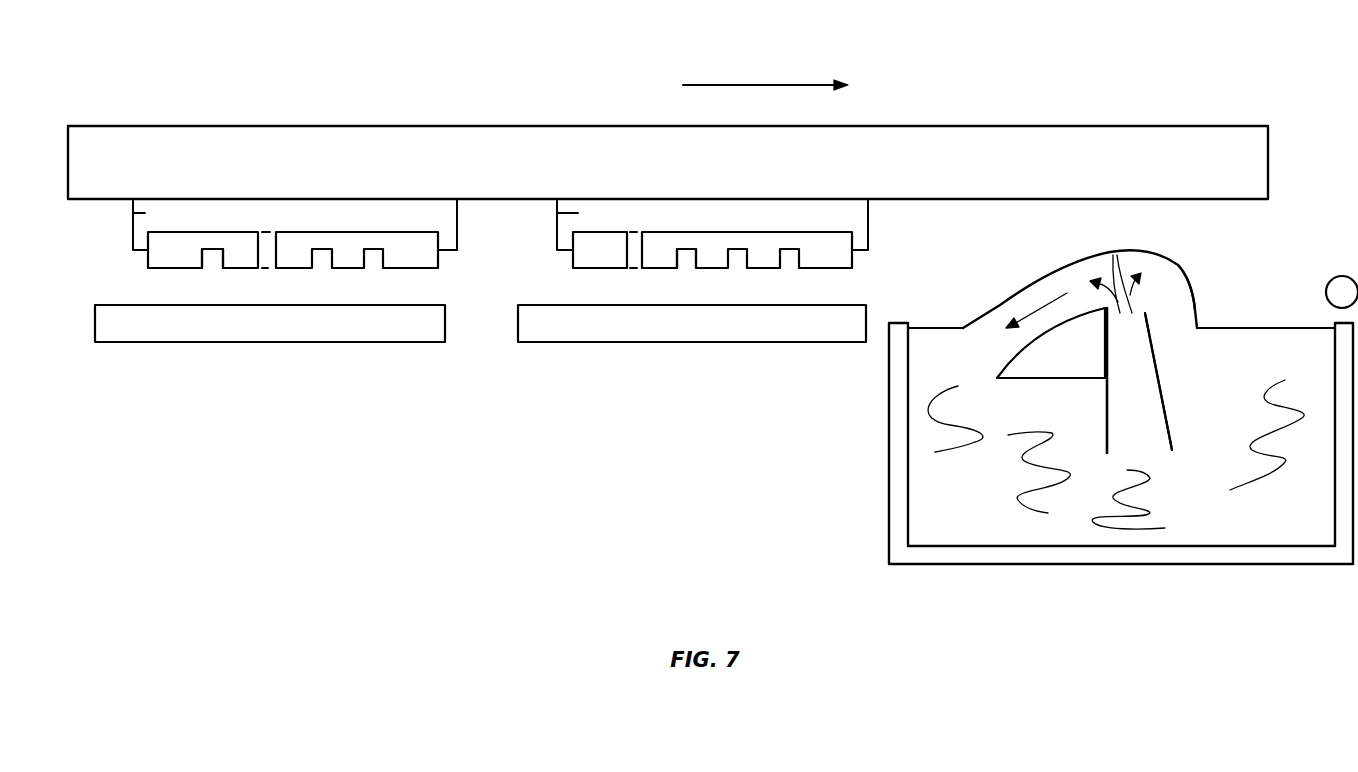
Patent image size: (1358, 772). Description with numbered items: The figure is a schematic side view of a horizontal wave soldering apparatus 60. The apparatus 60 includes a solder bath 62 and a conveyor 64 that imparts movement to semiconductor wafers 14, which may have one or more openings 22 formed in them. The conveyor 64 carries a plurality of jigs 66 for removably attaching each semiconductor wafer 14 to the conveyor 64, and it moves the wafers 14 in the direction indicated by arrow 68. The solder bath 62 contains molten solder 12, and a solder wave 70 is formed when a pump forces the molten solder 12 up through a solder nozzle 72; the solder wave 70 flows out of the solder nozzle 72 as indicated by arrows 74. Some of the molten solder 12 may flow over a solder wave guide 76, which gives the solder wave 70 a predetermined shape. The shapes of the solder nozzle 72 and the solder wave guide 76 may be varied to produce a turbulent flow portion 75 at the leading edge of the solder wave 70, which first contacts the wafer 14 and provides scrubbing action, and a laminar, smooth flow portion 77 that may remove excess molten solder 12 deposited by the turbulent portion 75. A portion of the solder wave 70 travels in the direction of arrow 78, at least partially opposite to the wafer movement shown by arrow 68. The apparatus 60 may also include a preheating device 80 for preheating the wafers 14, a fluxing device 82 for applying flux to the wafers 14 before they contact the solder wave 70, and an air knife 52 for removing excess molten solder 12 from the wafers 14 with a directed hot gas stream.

The horizontal wave soldering apparatus 60 is at (538, 85).
The arrow 68 is at (783, 85).
The conveyor 64 is at (1032, 145).
The jigs 66 is at (145, 213).
The semiconductor wafer 14 is at (147, 257).
The openings 22 is at (211, 268).
The fluxing device 82 is at (155, 327).
The preheating device 80 is at (682, 332).
The solder bath 62 is at (950, 557).
The molten solder 12 is at (952, 506).
The turbulent flow portion 75 is at (1047, 256).
The laminar flow portion 77 is at (1172, 256).
The solder wave guide 76 is at (1055, 365).
The solder nozzle 72 is at (1160, 368).
The arrows 74 is at (1116, 253).
The arrow 78 is at (1036, 310).
The solder wave 70 is at (1152, 297).
The air knife 52 is at (1336, 276).